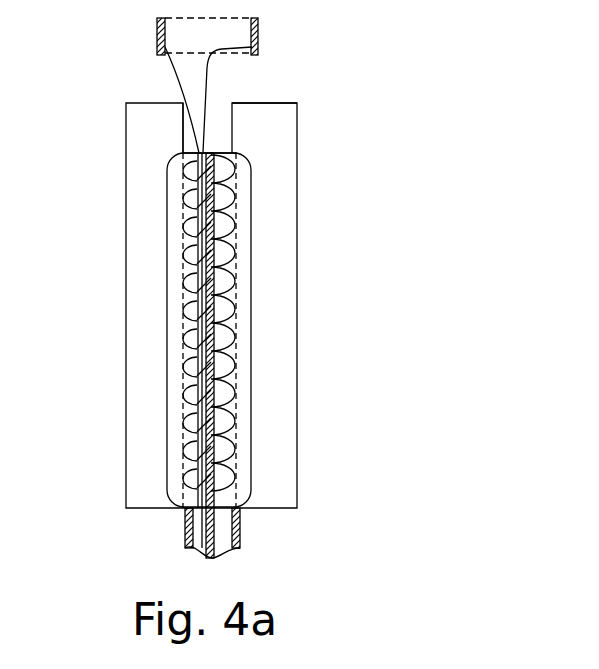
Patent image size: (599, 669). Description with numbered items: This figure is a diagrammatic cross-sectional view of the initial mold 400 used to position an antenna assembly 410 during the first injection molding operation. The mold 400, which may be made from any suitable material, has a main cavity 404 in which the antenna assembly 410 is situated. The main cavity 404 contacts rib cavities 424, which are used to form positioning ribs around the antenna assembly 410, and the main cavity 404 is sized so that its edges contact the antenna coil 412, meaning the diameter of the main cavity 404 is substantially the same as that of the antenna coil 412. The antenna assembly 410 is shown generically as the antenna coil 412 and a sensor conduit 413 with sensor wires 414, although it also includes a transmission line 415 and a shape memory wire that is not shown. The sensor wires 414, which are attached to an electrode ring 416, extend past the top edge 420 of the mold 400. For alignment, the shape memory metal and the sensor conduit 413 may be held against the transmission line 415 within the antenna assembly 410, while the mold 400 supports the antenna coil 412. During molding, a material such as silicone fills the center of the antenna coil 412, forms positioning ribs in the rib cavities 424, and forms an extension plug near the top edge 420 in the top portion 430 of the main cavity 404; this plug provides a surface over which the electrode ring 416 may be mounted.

The mold 400 is at (297, 117).
The main cavity 404 is at (233, 333).
The antenna assembly 410 is at (233, 153).
The antenna coil 412 is at (187, 425).
The sensor conduit 413 is at (187, 205).
The sensor wires 414 is at (185, 88).
The transmission line 415 is at (215, 418).
The electrode ring 416 is at (260, 42).
The top edge 420 is at (268, 100).
The rib cavities 424 is at (173, 280).
The top portion 430 is at (187, 130).